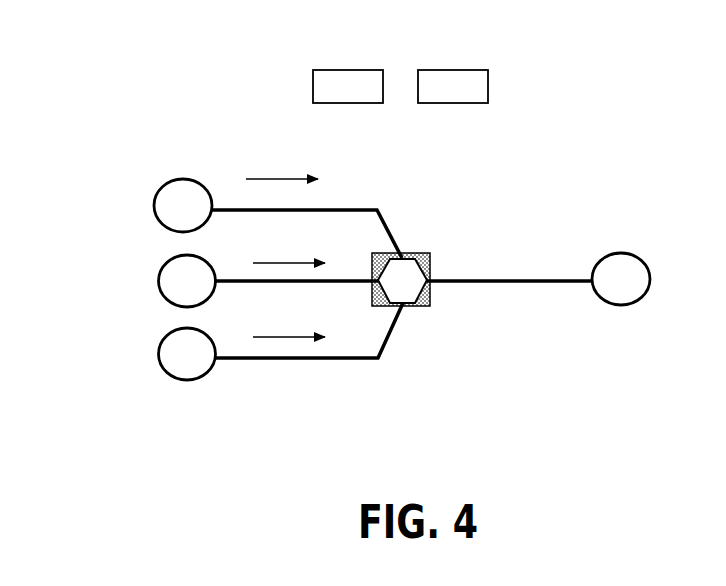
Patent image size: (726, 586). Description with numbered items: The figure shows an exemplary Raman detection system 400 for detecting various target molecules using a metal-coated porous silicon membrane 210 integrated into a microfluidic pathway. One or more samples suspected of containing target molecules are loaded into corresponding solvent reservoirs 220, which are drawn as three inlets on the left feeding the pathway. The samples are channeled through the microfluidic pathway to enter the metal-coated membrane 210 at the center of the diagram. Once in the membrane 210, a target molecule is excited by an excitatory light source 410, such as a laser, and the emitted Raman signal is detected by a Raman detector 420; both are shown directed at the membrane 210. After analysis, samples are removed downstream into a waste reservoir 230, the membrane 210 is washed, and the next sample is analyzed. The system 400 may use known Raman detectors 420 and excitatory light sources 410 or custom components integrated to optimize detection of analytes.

The Raman detection system 400 is at (59, 45).
The metal-coated porous silicon membrane 210 is at (420, 252).
The solvent reservoirs 220 is at (160, 343).
The waste reservoir 230 is at (613, 305).
The excitatory light source 410 is at (398, 217).
The Raman detector 420 is at (405, 223).